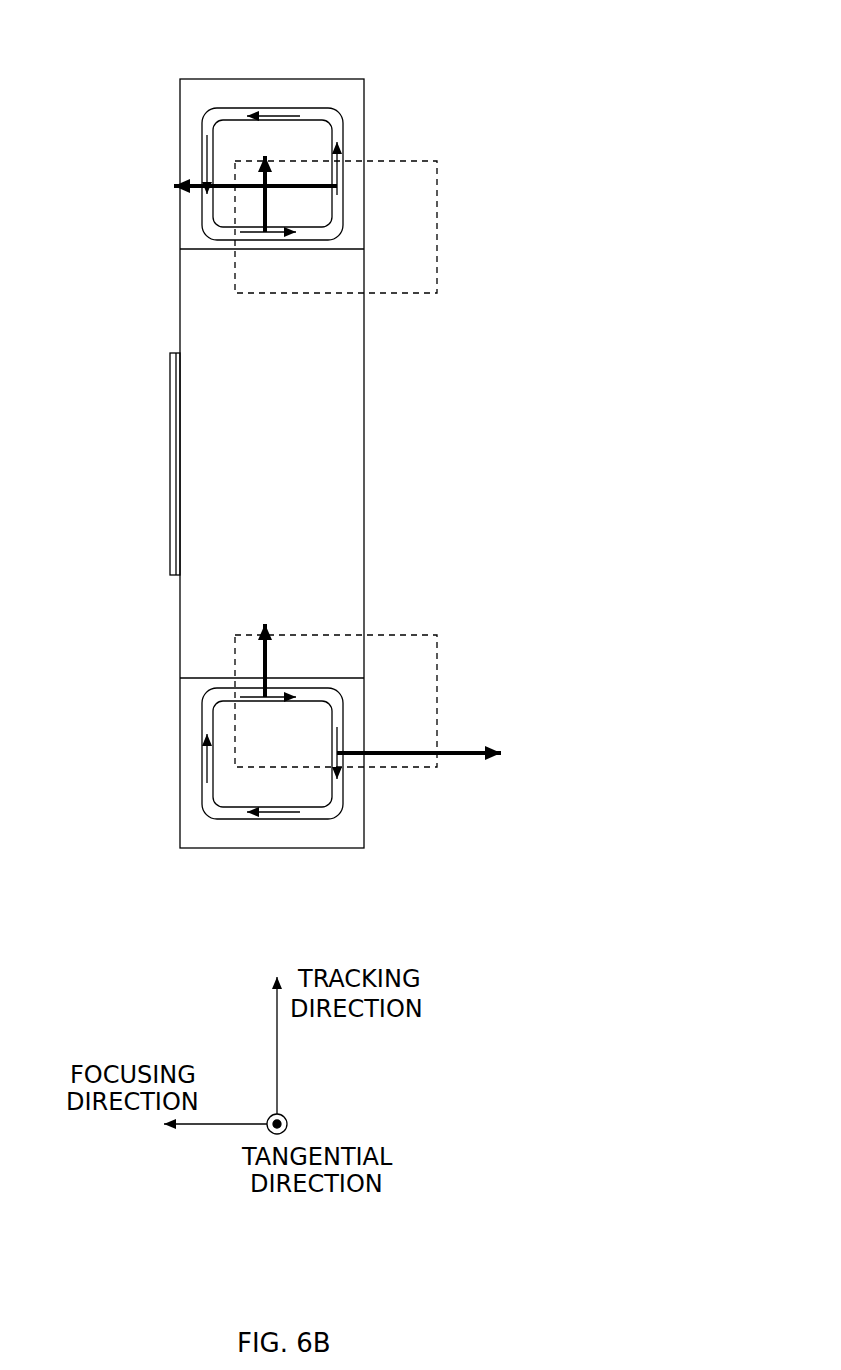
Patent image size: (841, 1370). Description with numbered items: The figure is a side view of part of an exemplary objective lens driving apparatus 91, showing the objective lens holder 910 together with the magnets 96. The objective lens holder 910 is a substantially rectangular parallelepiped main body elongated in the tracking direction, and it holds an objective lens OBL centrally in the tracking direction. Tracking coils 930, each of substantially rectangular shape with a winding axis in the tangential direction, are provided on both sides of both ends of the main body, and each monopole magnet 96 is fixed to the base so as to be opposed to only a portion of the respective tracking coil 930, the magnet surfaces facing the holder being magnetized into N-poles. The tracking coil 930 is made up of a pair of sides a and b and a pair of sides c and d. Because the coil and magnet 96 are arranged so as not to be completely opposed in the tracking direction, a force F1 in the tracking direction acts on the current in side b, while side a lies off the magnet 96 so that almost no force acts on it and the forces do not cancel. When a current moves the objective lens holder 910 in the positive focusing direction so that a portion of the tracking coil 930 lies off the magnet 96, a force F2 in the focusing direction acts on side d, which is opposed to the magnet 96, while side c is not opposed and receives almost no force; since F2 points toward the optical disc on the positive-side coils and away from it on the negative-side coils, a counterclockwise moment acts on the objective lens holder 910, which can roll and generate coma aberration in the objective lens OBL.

The objective lens driving apparatus 91 is at (390, 420).
The objective lens holder 910 is at (156, 387).
The objective lens OBL is at (170, 465).
The tracking coil 930 is at (232, 107).
The magnet 96 is at (407, 160).
The side a of tracking coil a is at (279, 102).
The side b of tracking coil b is at (269, 252).
The side c of tracking coil c is at (196, 155).
The side d of tracking coil d is at (354, 182).
The force in tracking direction F1 is at (287, 416).
The force in focusing direction F2 is at (323, 469).